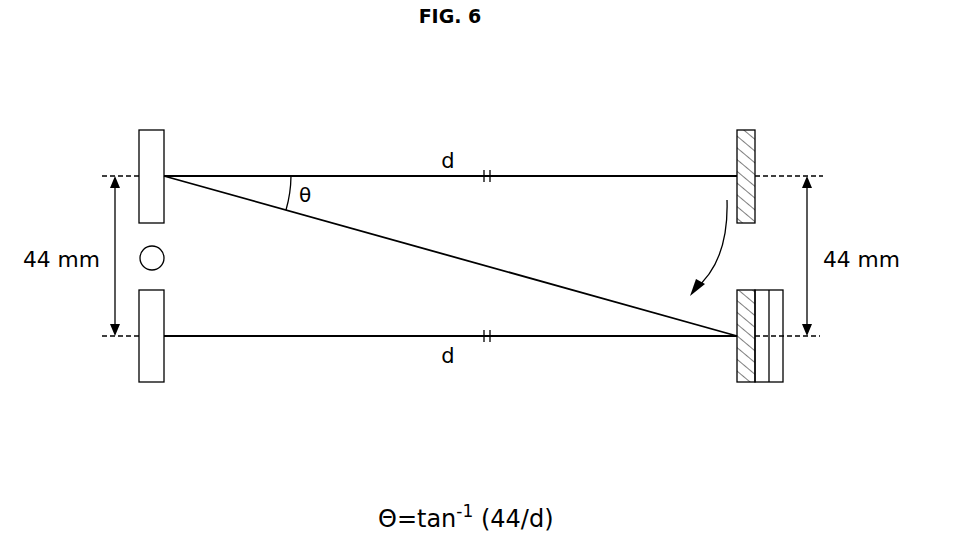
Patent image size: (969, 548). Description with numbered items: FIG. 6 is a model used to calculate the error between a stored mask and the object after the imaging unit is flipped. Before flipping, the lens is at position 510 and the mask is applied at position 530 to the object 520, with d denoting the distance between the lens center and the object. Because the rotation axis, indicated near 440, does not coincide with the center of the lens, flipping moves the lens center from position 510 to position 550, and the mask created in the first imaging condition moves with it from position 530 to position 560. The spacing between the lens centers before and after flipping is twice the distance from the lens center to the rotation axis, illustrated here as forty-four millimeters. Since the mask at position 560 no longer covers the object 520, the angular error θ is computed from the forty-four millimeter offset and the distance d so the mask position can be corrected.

The lens position after flipping 550 is at (152, 130).
The lens position before flipping 510 is at (150, 382).
The mask position after flipping 560 is at (745, 130).
The mask position before flipping 530 is at (740, 382).
The object 520 is at (783, 362).
The light emitter 440 is at (164, 256).